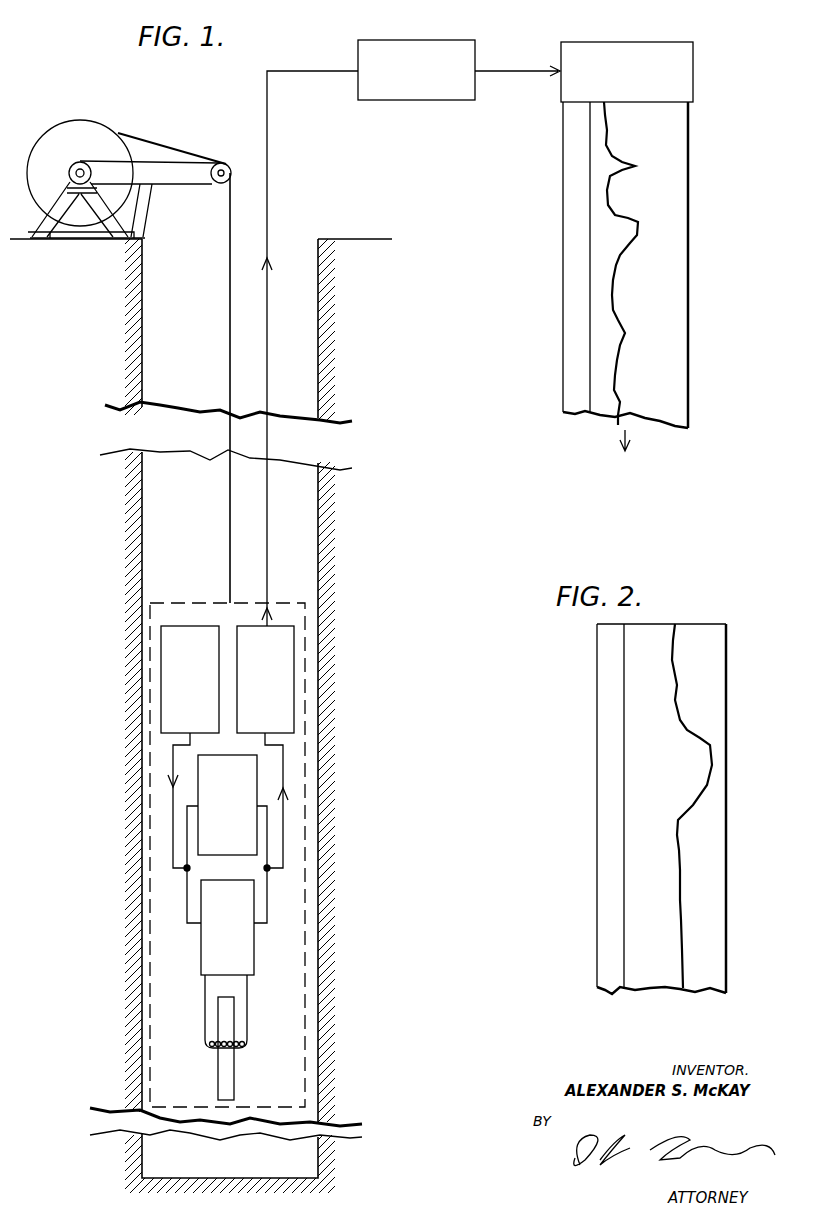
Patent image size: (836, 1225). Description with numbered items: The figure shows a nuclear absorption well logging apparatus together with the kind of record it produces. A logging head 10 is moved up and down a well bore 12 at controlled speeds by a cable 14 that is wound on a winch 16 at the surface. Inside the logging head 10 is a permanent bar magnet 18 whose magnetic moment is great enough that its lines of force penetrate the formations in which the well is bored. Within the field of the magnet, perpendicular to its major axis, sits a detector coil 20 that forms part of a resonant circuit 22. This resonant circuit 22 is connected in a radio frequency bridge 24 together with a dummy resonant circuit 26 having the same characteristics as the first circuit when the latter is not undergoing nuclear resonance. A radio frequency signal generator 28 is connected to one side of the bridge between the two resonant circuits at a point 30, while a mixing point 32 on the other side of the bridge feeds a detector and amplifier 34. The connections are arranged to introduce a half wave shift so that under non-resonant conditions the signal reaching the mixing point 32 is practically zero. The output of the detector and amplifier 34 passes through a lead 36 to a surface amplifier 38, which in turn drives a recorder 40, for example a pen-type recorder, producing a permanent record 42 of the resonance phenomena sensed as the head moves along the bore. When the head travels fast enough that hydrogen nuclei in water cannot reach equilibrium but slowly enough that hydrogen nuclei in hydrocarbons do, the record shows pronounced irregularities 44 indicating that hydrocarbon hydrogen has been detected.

In FIG. 1, the logging head 10 is at (306, 637).
In FIG. 1, the well bore 12 is at (318, 534).
In FIG. 1, the cable 14 is at (229, 304).
In FIG. 1, the winch 16 is at (58, 128).
In FIG. 1, the permanent bar magnet 18 is at (218, 1080).
In FIG. 1, the detector coil 20 is at (247, 1042).
In FIG. 1, the resonant circuit 22 is at (254, 956).
In FIG. 1, the radio frequency bridge 24 is at (187, 906).
In FIG. 1, the dummy resonant circuit 26 is at (257, 761).
In FIG. 1, the radio frequency signal generator 28 is at (161, 693).
In FIG. 1, the point 30 is at (187, 869).
In FIG. 1, the mixing point 32 is at (267, 869).
In FIG. 1, the detector and amplifier 34 is at (294, 683).
In FIG. 1, the lead 36 is at (268, 197).
In FIG. 1, the amplifier 38 is at (412, 40).
In FIG. 1, the recorder 40 is at (640, 42).
In FIG. 1, the permanent record 42 is at (688, 167).
In FIG. 2, the permanent record 42 is at (720, 728).
In FIG. 1, the pronounced irregularities 44 is at (640, 220).